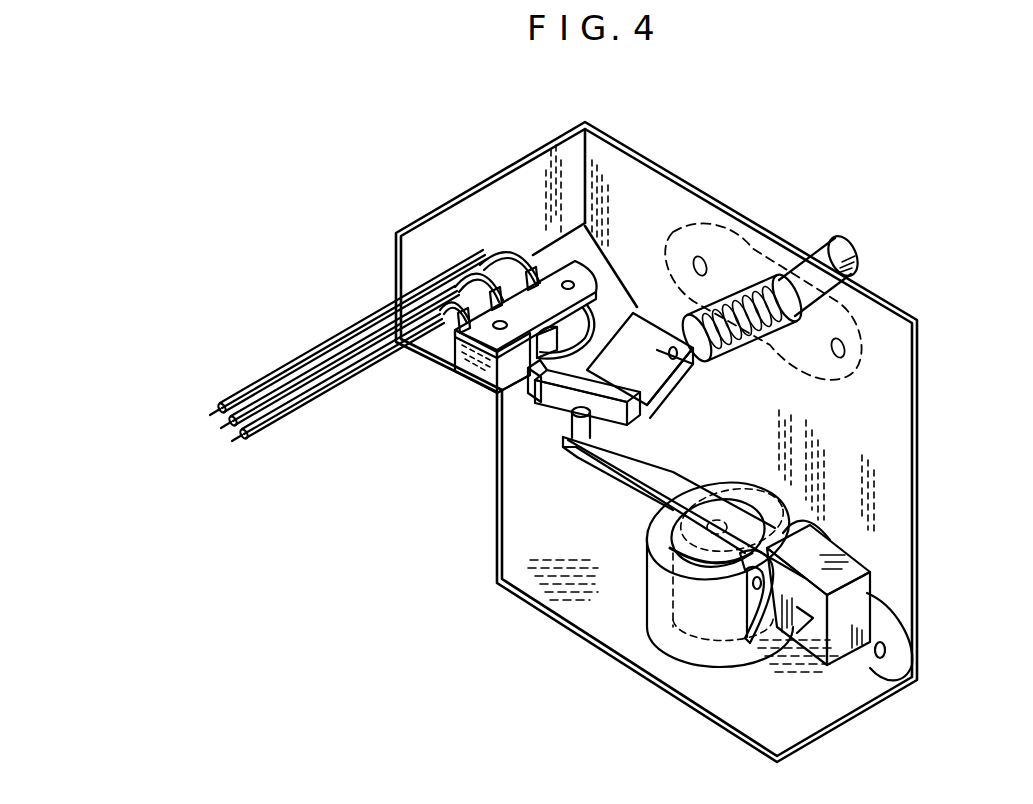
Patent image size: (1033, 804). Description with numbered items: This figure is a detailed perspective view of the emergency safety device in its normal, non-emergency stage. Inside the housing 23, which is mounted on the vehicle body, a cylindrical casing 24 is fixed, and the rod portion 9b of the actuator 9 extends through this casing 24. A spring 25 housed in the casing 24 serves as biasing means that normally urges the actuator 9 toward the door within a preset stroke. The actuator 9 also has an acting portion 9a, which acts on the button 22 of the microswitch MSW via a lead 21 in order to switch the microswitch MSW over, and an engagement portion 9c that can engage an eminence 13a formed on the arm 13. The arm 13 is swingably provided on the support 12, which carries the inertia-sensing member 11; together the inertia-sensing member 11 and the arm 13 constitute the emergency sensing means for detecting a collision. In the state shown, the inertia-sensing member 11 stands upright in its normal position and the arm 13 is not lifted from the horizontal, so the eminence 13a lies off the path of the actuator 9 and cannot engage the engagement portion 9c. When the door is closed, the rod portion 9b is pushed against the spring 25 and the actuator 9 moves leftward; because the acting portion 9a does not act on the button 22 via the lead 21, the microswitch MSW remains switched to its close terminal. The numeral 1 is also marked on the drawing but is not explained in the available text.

The lock device 1 is at (513, 371).
The actuator 9 is at (617, 362).
The acting portion 9a is at (536, 392).
The rod portion 9b is at (824, 247).
The engagement portion 9c is at (580, 400).
The inertia-sensing member 11 is at (672, 558).
The support 12 is at (692, 650).
The arm 13 is at (624, 470).
The eminence 13a is at (594, 453).
The lead 21 is at (590, 328).
The button 22 is at (550, 337).
The housing 23 is at (893, 505).
The cylindrical casing 24 is at (722, 300).
The spring 25 is at (738, 358).
The microswitch MSW is at (467, 360).